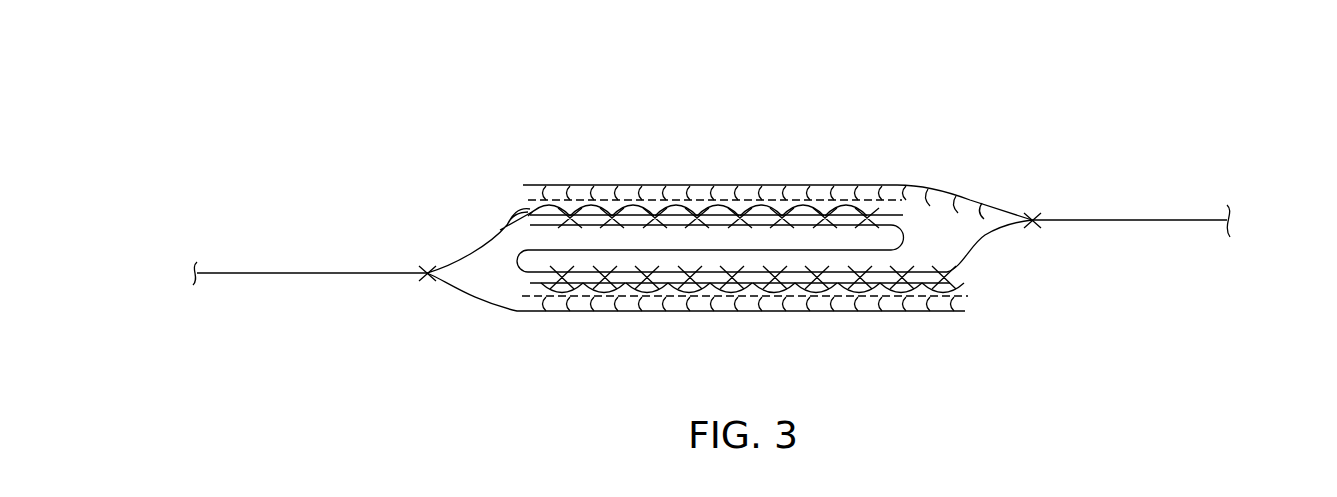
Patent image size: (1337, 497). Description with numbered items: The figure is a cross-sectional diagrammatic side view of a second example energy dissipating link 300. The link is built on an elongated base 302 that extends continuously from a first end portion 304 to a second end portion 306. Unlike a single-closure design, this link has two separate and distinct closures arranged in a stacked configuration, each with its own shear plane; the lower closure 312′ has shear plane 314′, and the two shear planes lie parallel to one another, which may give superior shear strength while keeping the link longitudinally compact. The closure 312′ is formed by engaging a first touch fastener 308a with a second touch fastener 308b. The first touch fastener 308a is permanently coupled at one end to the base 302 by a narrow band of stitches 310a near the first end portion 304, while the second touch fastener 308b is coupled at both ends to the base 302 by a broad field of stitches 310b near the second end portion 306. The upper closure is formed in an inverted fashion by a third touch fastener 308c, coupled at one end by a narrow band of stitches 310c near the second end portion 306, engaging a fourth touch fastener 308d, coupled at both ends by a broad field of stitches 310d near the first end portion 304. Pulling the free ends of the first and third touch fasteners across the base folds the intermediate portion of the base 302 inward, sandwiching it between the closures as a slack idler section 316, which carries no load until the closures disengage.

The energy dissipating link 300 is at (318, 78).
The elongated base 302 is at (284, 262).
The first end portion 304 is at (192, 266).
The second end portion 306 is at (1230, 215).
The first touch fastener 308a is at (613, 320).
The second touch fastener 308b is at (965, 276).
The third touch fastener 308c is at (863, 178).
The fourth touch fastener 308d is at (496, 212).
The narrow band of stitches 310a is at (424, 268).
The broad field of stitches 310b is at (858, 285).
The narrow band of stitches 310c is at (1037, 212).
The broad field of stitches 310d is at (598, 218).
The closure 312′ is at (970, 305).
The shear plane 314′ is at (748, 297).
The slack idler section 316 is at (752, 248).